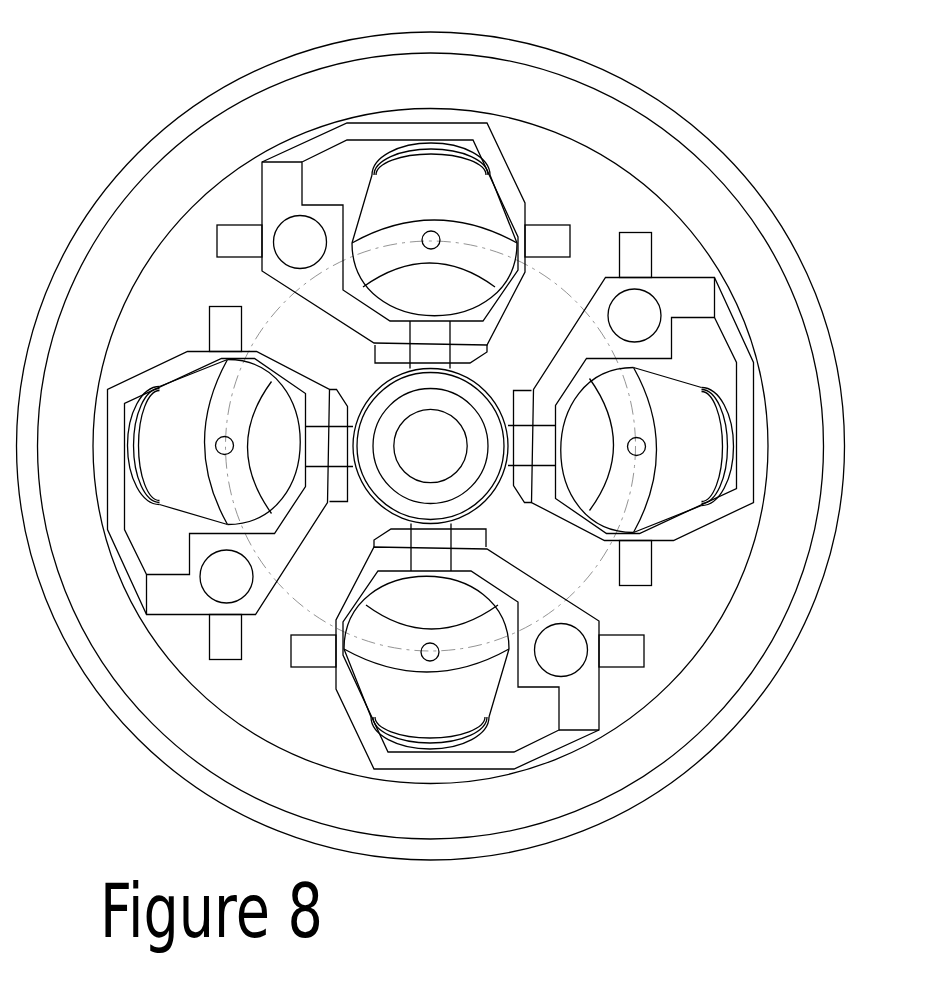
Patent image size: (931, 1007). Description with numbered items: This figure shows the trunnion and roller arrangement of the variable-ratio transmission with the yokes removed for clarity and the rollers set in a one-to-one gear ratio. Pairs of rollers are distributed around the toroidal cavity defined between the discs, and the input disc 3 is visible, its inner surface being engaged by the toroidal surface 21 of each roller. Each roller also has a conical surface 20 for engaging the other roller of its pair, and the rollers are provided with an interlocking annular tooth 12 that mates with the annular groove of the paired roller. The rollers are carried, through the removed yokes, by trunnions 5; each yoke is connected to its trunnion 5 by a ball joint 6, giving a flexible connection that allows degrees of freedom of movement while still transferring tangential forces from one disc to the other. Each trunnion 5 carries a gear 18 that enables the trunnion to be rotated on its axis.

The disc 3 is at (635, 697).
The trunnion 5 is at (698, 293).
The ball joint 6 is at (222, 575).
The annular tooth 12 is at (357, 164).
The gear 18 is at (522, 448).
The conical surface 20 is at (405, 193).
The toroidal surface 21 is at (377, 262).